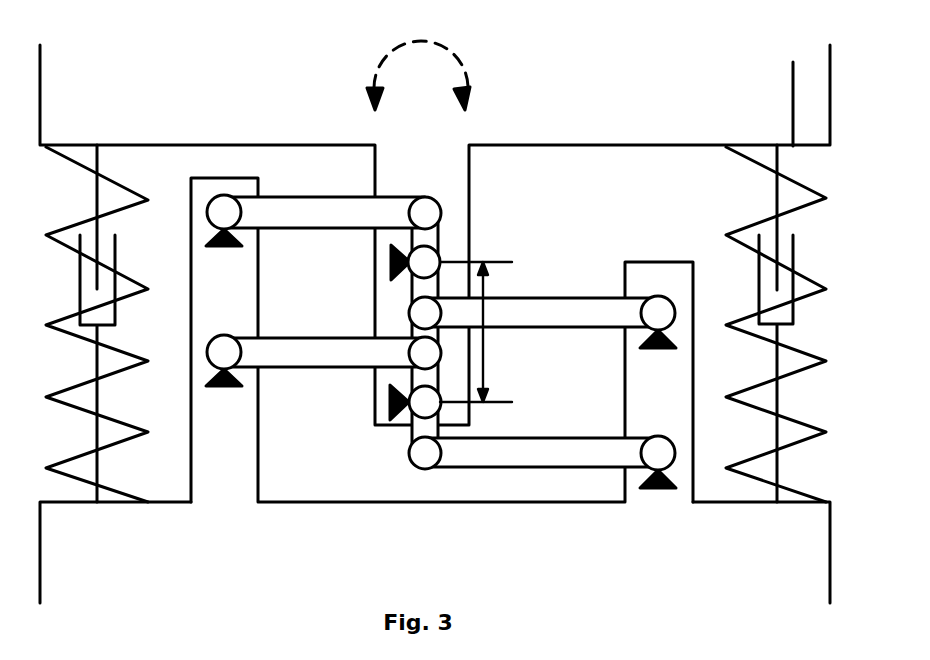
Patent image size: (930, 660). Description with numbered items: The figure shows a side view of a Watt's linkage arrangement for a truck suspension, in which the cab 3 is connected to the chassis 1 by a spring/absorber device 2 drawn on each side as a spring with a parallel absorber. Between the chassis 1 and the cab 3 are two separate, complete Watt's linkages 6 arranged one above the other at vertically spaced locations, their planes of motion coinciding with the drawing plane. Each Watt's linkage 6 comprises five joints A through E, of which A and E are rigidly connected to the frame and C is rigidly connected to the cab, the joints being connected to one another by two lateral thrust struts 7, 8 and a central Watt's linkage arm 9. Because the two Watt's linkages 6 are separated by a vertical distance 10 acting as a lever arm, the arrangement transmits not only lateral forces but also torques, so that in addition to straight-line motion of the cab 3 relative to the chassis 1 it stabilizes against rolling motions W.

The chassis 1 is at (627, 570).
The spring/absorber device 2 is at (95, 540).
The cab 3 is at (655, 95).
The Watt's linkage 6 is at (603, 227).
The lateral thrust strut 7 is at (314, 212).
The lateral thrust strut 8 is at (548, 313).
The central Watt's linkage arm 9 is at (423, 287).
The vertical distance 10 is at (478, 332).